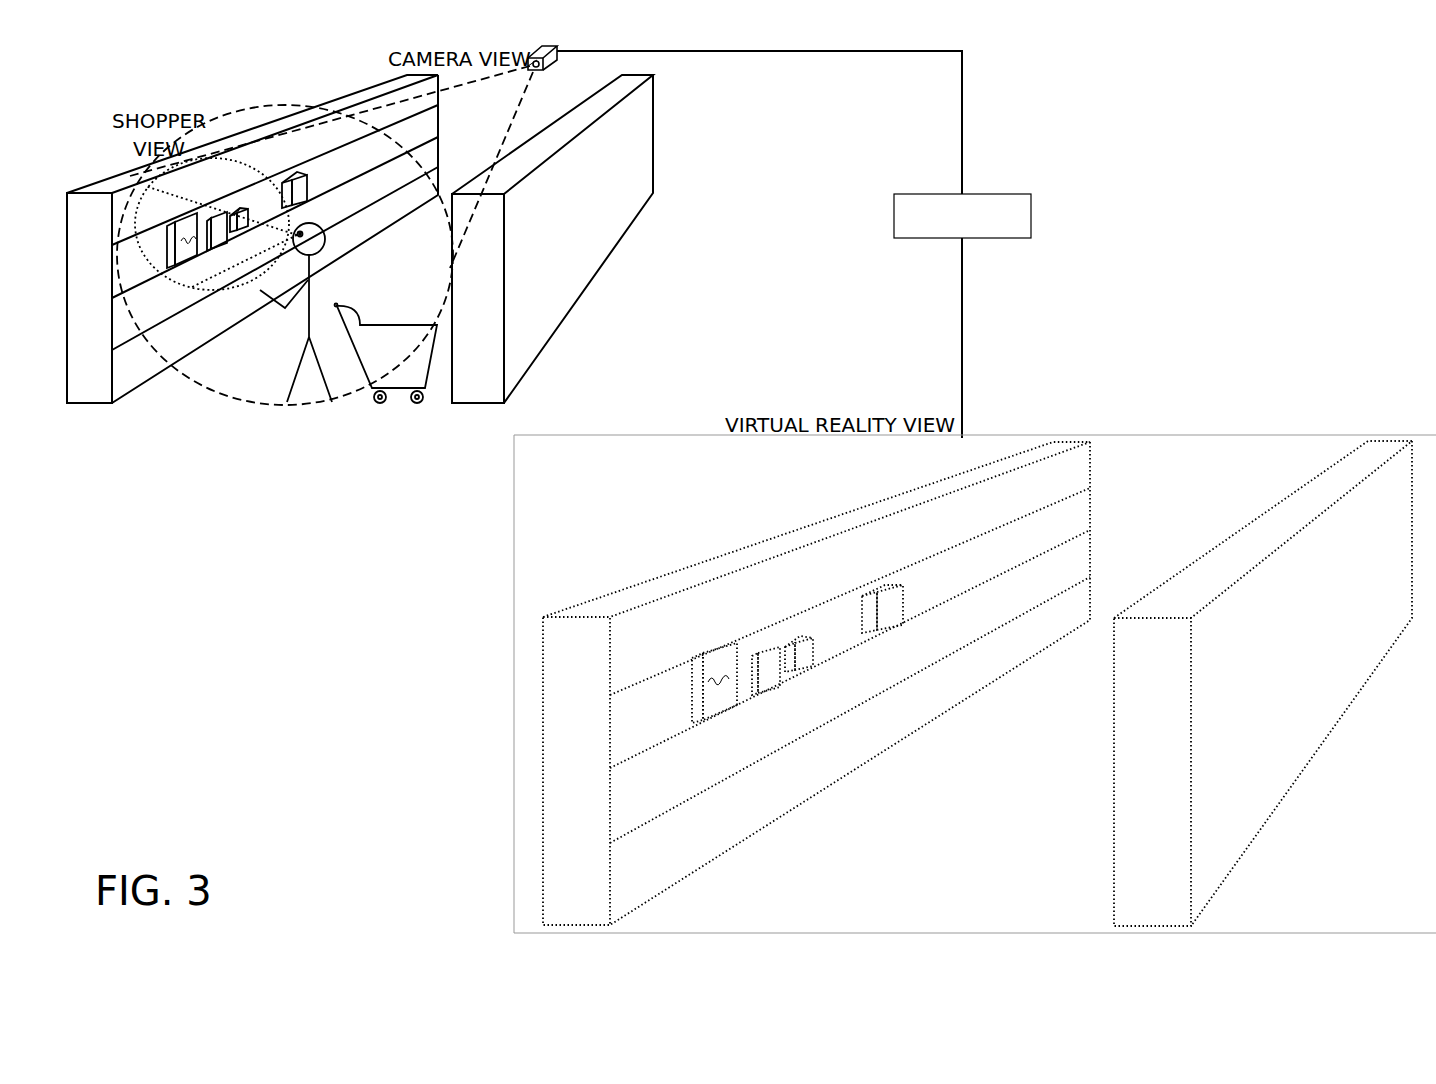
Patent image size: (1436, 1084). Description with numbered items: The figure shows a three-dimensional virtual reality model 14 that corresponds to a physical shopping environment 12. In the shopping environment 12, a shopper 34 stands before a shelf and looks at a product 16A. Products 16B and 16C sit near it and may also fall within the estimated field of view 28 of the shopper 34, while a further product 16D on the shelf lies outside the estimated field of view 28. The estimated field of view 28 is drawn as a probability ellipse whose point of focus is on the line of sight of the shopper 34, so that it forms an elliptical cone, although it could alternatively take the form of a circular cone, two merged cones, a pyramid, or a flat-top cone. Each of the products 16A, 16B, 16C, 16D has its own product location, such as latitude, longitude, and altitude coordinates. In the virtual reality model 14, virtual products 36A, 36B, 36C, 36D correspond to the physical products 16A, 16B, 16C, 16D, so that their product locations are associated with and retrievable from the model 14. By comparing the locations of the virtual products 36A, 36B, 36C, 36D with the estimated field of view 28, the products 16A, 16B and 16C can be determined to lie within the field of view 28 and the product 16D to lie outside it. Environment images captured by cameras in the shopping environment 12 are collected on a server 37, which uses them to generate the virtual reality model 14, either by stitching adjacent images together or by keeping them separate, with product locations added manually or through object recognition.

The shopping environment 12 is at (670, 80).
The 3-D virtual reality model 14 is at (1326, 409).
The product 16A is at (212, 250).
The product 16B is at (168, 222).
The product 16C is at (238, 208).
The product 16D is at (296, 175).
The estimated field of view 28 is at (146, 258).
The shopper 34 is at (296, 370).
The virtual product 36A is at (767, 648).
The virtual product 36B is at (700, 658).
The virtual product 36C is at (793, 642).
The virtual product 36D is at (871, 592).
The server 37 is at (962, 216).